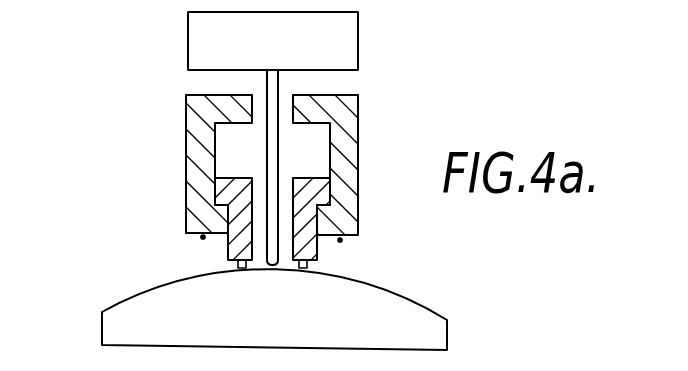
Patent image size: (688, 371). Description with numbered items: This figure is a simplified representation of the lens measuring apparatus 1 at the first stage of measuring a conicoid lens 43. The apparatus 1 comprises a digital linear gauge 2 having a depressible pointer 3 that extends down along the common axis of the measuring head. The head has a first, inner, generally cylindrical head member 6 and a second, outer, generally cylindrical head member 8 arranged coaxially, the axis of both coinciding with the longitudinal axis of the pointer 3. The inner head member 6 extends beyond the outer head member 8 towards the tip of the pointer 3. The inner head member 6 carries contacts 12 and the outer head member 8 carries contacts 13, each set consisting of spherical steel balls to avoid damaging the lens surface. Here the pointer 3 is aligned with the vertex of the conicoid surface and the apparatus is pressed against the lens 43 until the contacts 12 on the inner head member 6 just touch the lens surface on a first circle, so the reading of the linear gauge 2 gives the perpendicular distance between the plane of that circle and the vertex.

The lens measuring apparatus 1 is at (166, 131).
The digital linear gauge 2 is at (342, 50).
The depressible pointer 3 is at (276, 88).
The second head member 8 is at (342, 160).
The first head member 6 is at (316, 203).
The contacts 13 is at (341, 243).
The contacts 12 is at (241, 266).
The lens 43 is at (112, 326).